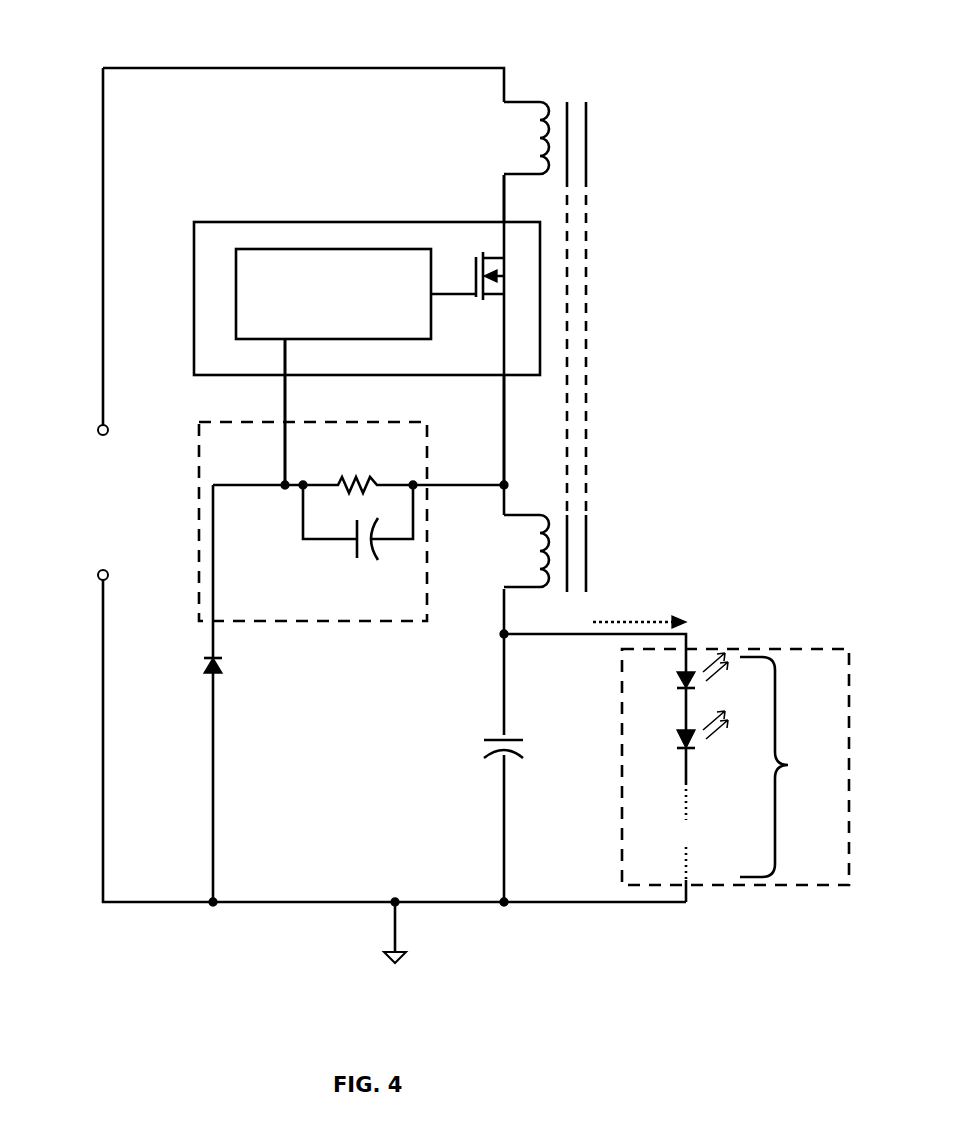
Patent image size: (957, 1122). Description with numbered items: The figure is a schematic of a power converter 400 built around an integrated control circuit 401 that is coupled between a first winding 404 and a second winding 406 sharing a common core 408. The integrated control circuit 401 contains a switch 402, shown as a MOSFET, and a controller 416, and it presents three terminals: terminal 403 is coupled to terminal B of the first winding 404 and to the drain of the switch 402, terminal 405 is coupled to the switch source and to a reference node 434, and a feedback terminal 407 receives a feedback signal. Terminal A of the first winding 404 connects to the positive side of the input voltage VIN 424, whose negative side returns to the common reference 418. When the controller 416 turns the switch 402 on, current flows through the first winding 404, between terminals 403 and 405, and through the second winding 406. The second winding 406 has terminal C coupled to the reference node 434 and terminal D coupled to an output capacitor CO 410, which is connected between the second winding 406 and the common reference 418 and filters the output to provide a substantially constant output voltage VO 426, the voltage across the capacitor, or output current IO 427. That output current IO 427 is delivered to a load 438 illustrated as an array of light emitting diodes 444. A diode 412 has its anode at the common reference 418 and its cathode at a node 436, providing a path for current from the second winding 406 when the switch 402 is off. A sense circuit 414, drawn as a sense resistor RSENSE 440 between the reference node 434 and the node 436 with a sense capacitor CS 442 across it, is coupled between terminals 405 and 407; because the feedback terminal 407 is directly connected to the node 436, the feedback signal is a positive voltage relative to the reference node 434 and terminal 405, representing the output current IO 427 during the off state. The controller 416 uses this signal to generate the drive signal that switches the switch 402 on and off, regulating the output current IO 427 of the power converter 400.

The power converter 400 is at (754, 66).
The integrated control circuit 401 is at (214, 213).
The switch S1 402 is at (478, 305).
The terminal 403 is at (500, 217).
The first winding 404 is at (552, 100).
The terminal 405 is at (508, 382).
The second winding 406 is at (493, 573).
The feedback terminal FB 407 is at (246, 392).
The core 408 is at (598, 135).
The output capacitor CO 410 is at (432, 742).
The diode D1 412 is at (172, 688).
The sense circuit 414 is at (328, 634).
The controller 416 is at (333, 294).
The common reference 418 is at (405, 930).
The input voltage VIN 424 is at (123, 523).
The output voltage VO 426 is at (540, 767).
The output current IO 427 is at (660, 590).
The reference node 434 is at (496, 492).
The node 436 is at (297, 497).
The load 438 is at (787, 640).
The sense resistor RSENSE 440 is at (422, 450).
The sense capacitor CS 442 is at (350, 576).
The light emitting diodes 444 is at (760, 765).